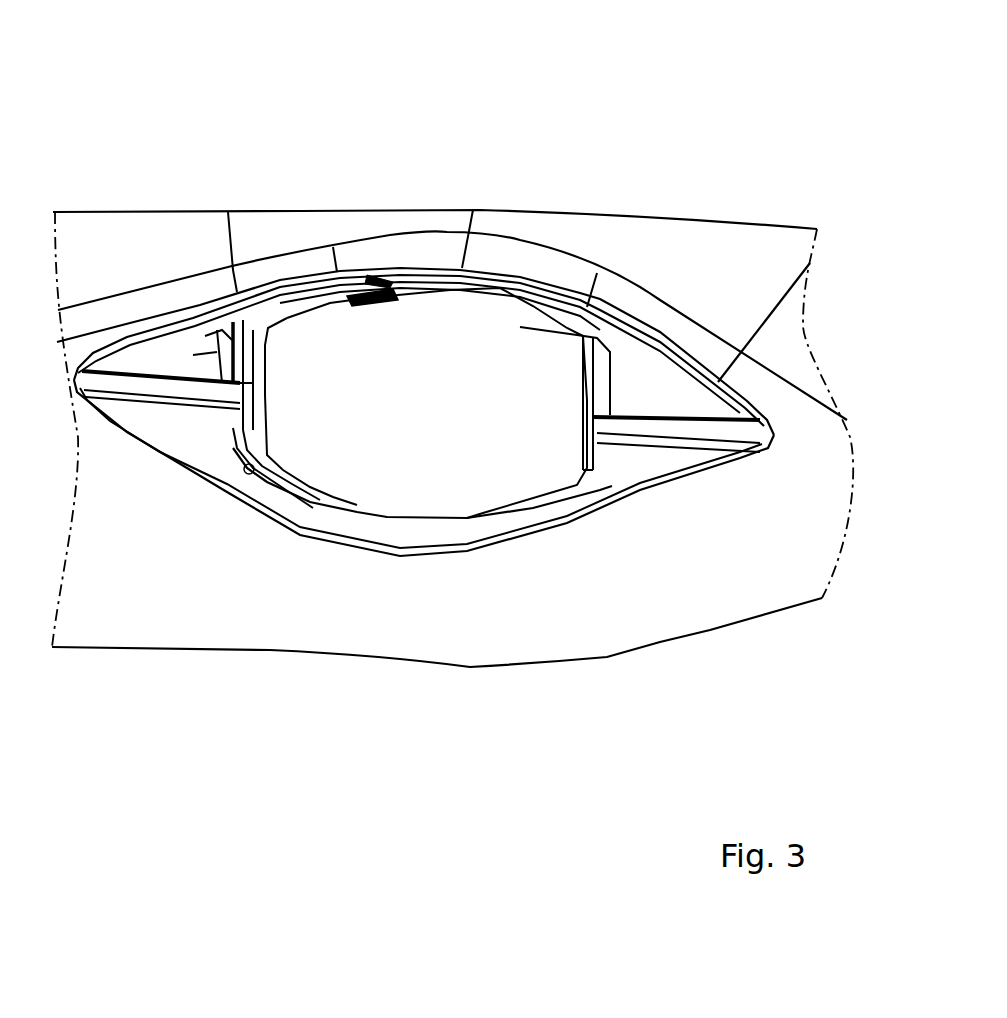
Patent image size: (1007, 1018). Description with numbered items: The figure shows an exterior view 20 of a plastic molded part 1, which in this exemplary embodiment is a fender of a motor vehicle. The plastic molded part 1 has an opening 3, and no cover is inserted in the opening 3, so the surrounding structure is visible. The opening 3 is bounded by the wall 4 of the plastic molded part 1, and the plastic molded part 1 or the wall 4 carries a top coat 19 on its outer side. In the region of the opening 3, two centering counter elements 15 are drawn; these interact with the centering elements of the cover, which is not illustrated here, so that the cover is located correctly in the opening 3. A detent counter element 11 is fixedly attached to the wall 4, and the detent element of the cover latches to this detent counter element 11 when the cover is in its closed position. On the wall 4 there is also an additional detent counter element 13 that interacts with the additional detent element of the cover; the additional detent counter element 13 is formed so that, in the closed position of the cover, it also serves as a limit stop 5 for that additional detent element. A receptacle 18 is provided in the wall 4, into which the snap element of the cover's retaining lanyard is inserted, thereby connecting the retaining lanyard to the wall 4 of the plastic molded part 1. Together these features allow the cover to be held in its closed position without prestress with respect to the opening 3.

The plastic molded part 1 is at (560, 181).
The opening 3 is at (432, 401).
The wall 4 is at (653, 590).
The limit stop 5 is at (380, 281).
The detent counter element 11 is at (387, 518).
The additional detent counter element 13 is at (360, 287).
The centering counter elements 15 is at (236, 321).
The receptacle 18 is at (223, 353).
The top coat 19 is at (695, 257).
The exterior view 20 is at (148, 201).